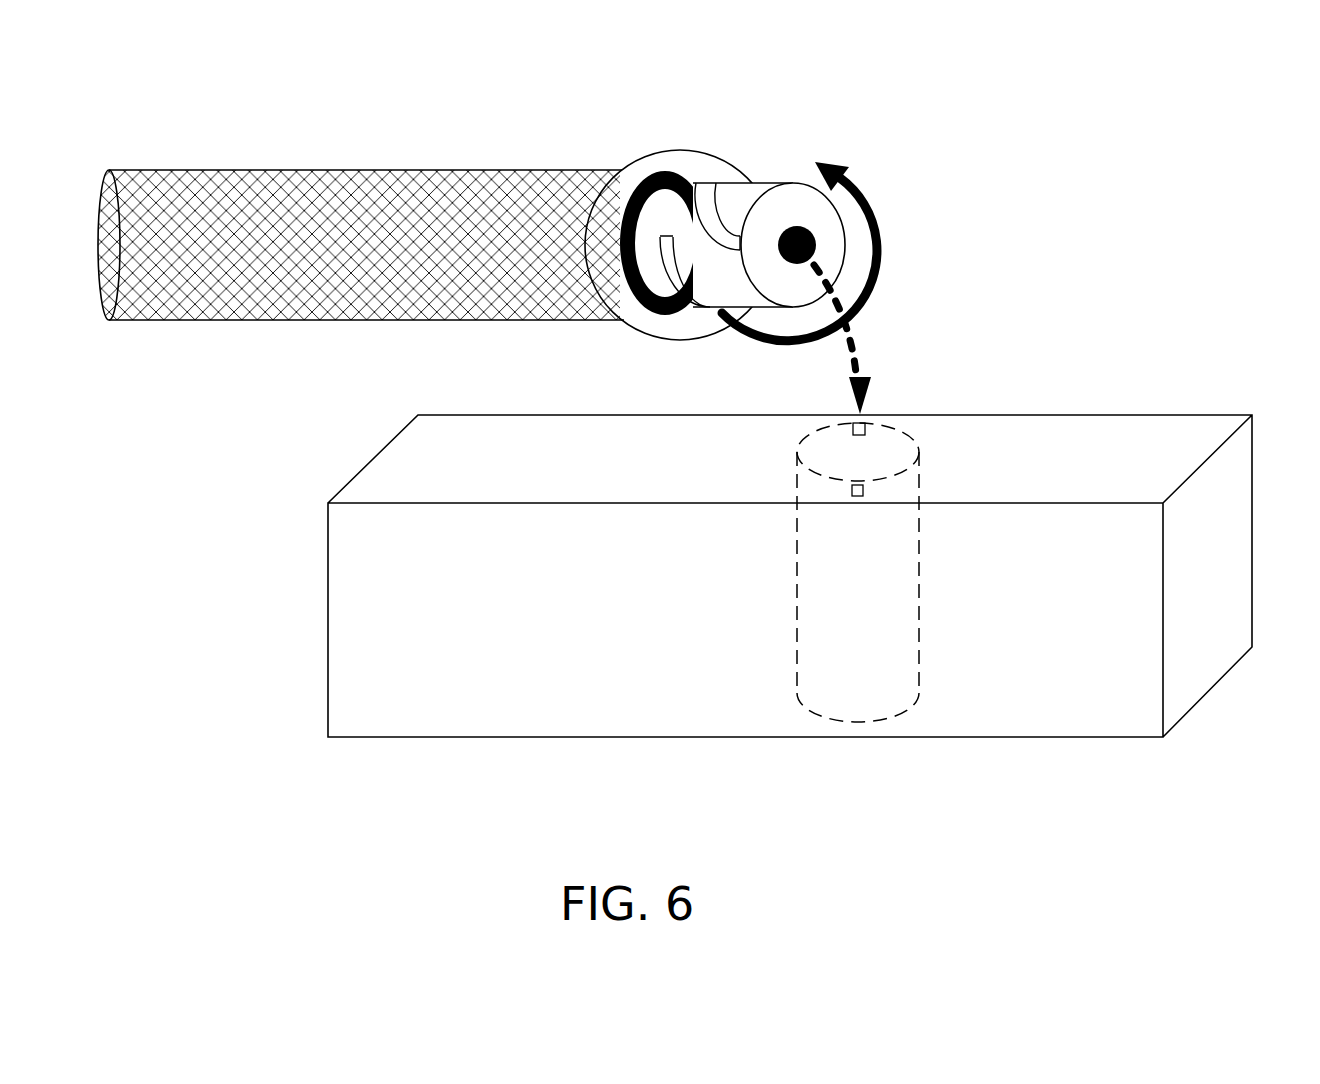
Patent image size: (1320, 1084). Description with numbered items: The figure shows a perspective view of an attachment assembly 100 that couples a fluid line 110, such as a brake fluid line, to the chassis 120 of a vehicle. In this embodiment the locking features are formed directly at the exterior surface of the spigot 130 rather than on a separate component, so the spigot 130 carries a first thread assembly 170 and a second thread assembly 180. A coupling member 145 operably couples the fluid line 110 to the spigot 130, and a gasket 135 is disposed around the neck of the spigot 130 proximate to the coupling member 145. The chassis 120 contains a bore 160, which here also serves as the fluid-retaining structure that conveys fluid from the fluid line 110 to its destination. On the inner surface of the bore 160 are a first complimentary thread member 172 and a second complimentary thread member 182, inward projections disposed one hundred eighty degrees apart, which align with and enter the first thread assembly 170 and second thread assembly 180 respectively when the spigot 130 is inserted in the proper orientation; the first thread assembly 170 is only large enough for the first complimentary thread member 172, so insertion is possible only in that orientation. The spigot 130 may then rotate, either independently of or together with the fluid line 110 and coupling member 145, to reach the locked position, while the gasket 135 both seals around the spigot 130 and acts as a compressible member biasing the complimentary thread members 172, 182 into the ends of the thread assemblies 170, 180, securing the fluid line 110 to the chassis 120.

The attachment assembly 100 is at (655, 122).
The fluid line 110 is at (470, 170).
The chassis 120 is at (1205, 413).
The spigot 130 is at (823, 220).
The gasket 135 is at (663, 305).
The coupling member 145 is at (742, 175).
The bore 160 is at (888, 720).
The first thread assembly 170 is at (708, 193).
The first complimentary thread member 172 is at (865, 492).
The second thread assembly 180 is at (677, 275).
The second complimentary thread member 182 is at (867, 425).